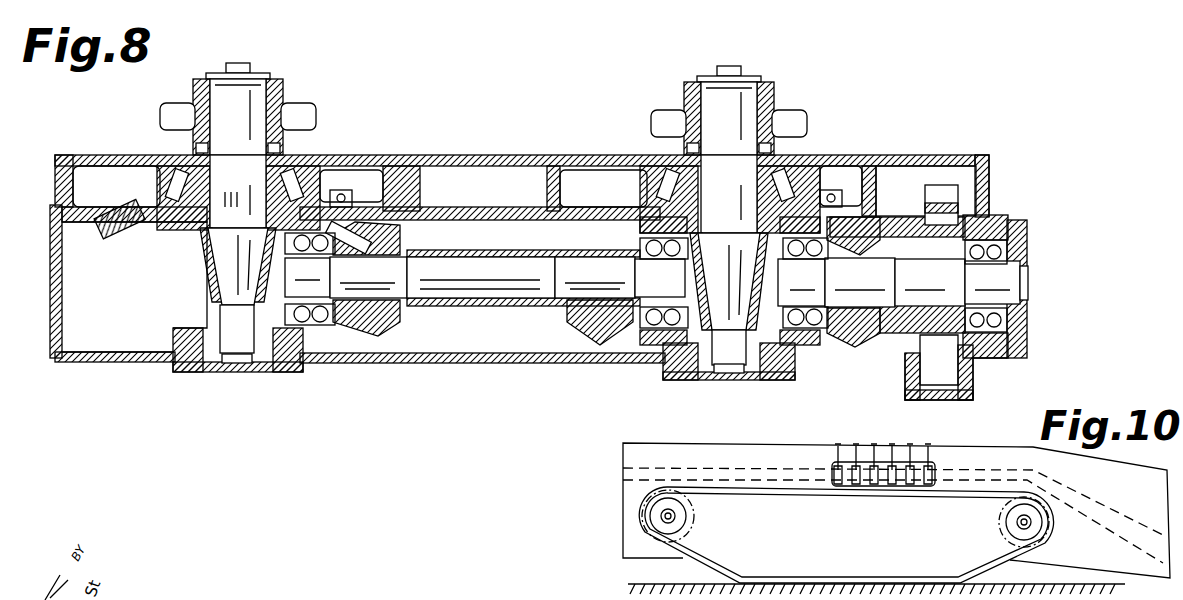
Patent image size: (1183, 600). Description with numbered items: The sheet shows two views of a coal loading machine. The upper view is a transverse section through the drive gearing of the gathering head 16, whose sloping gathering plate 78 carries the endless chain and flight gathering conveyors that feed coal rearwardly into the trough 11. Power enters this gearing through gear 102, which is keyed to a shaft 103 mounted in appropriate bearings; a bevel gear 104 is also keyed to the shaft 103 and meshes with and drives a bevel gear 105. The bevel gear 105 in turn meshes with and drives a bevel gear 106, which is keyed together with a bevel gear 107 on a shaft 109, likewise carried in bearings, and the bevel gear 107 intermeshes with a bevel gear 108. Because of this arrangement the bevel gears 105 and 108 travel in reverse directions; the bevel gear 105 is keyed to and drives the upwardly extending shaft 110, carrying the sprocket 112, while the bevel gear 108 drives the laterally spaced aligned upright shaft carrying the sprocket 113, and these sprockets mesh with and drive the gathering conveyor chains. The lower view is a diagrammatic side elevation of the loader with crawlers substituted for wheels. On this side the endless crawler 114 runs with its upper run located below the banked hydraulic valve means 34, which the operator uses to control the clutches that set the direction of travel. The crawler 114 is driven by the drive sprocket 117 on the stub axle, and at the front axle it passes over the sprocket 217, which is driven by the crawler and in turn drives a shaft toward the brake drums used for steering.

In FIG. 8, the sloping gathering plate 78 is at (400, 157).
In FIG. 8, the sprocket 113 is at (302, 113).
In FIG. 8, the sprocket 112 is at (797, 121).
In FIG. 8, the upwardly extending shaft 110 is at (725, 264).
In FIG. 8, the bevel gear 108 is at (367, 204).
In FIG. 8, the bevel gear 107 is at (400, 236).
In FIG. 8, the shaft 109 is at (485, 277).
In FIG. 8, the bevel gear 106 is at (580, 325).
In FIG. 8, the bevel gear 105 is at (826, 190).
In FIG. 8, the bevel gear 104 is at (856, 337).
In FIG. 8, the shaft 103 is at (951, 286).
In FIG. 8, the gear 102 is at (943, 188).
In FIG. 8, the gathering head 16 is at (999, 198).
In FIG. 10, the trough 11 is at (760, 452).
In FIG. 10, the hydraulic valve means 34 is at (951, 460).
In FIG. 10, the endless crawler 114 is at (797, 490).
In FIG. 10, the sprocket 217 is at (692, 519).
In FIG. 10, the drive sprocket 117 is at (1003, 532).